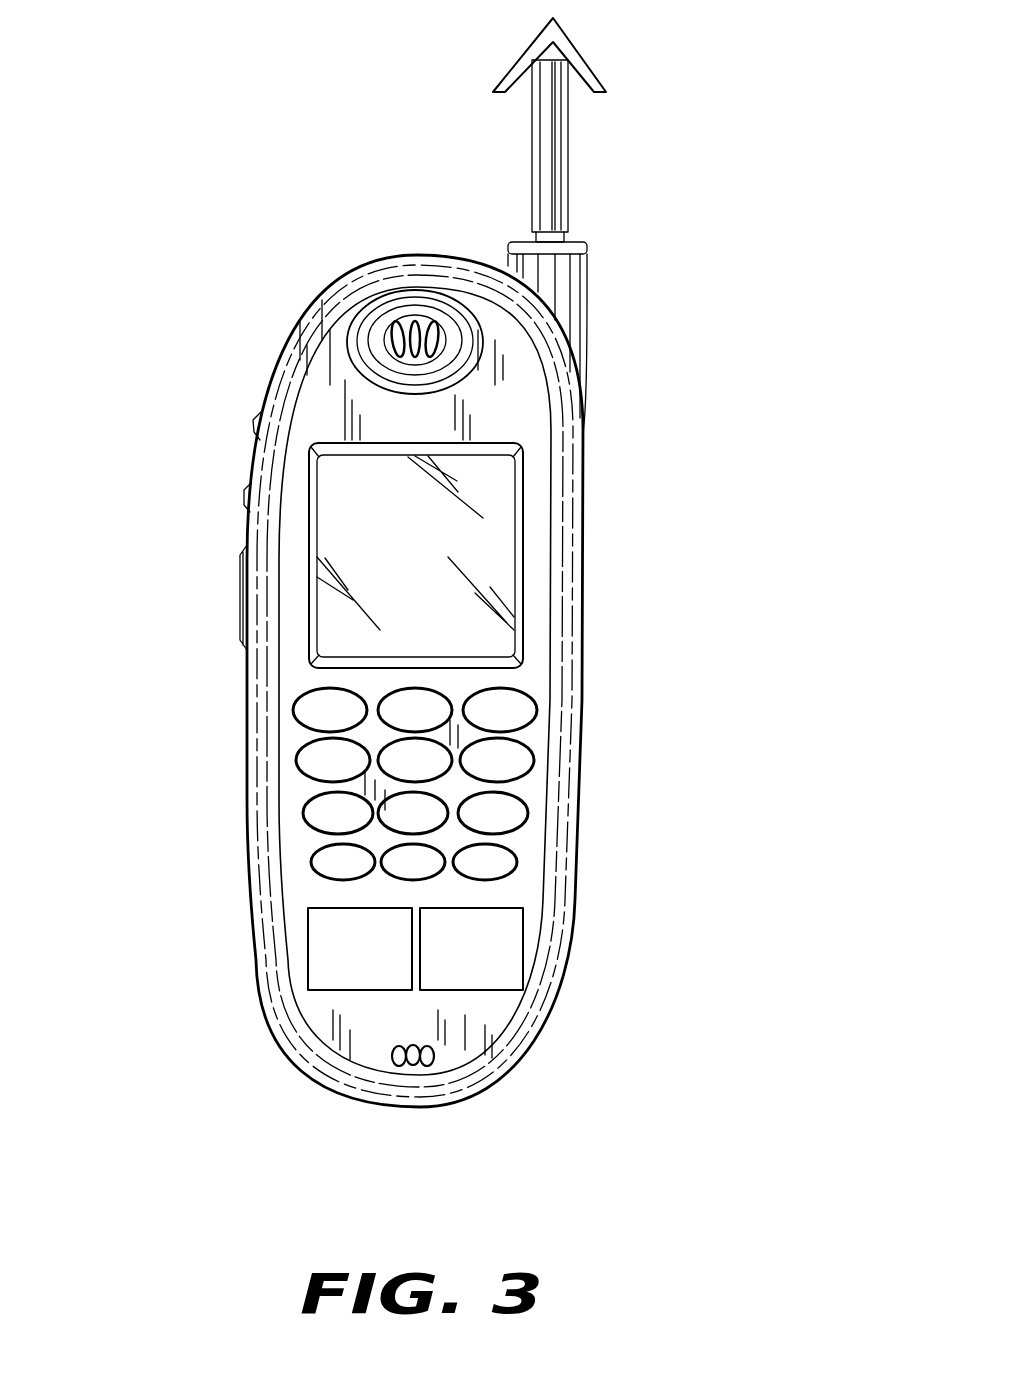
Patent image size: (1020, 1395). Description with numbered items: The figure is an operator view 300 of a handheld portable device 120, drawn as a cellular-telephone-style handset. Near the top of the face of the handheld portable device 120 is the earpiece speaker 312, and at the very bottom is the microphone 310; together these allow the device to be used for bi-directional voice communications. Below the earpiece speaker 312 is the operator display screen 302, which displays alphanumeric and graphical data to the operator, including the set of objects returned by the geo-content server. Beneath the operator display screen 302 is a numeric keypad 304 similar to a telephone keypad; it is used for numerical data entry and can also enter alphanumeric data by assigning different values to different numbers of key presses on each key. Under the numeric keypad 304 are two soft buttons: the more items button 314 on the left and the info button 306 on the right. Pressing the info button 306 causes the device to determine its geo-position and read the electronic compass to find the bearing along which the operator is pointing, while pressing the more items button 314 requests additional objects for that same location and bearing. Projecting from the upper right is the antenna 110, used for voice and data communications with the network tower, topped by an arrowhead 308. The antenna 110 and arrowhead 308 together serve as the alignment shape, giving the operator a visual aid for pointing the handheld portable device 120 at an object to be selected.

The operator view 300 is at (668, 1163).
The handheld portable device 120 is at (248, 737).
The antenna 110 is at (563, 188).
The arrowhead 308 is at (580, 55).
The earpiece speaker 312 is at (393, 338).
The operator display screen 302 is at (327, 512).
The numeric keypad 304 is at (528, 783).
The info button 306 is at (507, 925).
The more items button 314 is at (313, 930).
The microphone 310 is at (415, 1062).